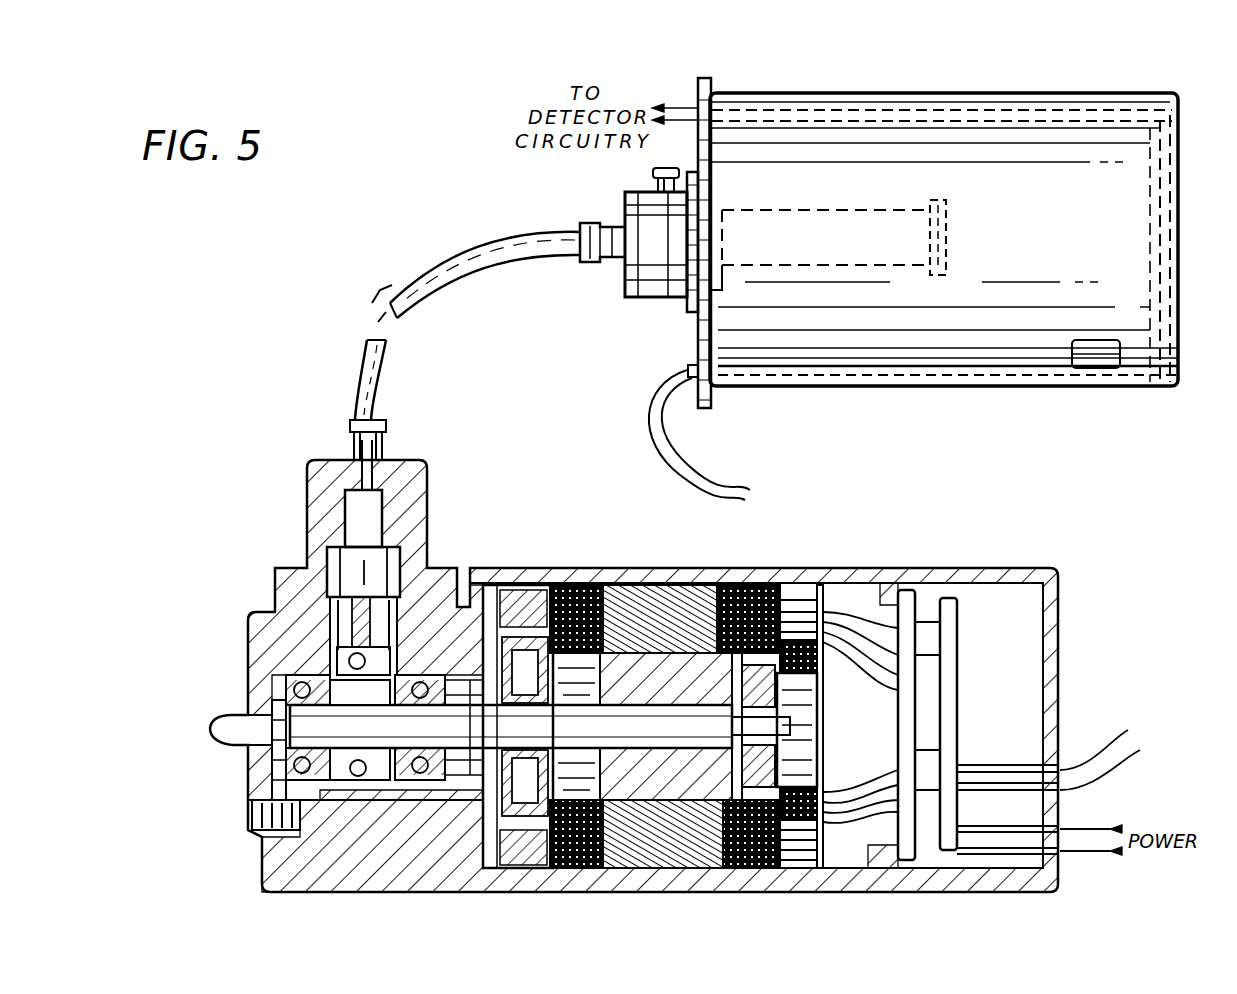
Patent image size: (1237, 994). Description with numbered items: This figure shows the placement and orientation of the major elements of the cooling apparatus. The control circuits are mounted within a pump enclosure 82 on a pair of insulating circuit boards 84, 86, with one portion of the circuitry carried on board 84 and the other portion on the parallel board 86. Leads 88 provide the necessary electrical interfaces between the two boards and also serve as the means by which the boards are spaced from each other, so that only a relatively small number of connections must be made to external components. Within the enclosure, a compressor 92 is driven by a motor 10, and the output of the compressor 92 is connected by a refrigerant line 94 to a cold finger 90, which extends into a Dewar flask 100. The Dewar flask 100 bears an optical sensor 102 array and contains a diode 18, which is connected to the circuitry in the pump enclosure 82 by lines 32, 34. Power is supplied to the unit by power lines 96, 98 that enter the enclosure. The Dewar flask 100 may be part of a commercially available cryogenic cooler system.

The motor 10 is at (638, 583).
The diode 18 is at (1122, 370).
The line 32 is at (710, 478).
The line 34 is at (715, 483).
The pump enclosure 82 is at (844, 583).
The insulating circuit board 84 is at (908, 590).
The insulating circuit board 86 is at (952, 600).
The leads 88 is at (930, 660).
The cold finger 90 is at (902, 208).
The compressor 92 is at (312, 614).
The refrigerant line 94 is at (354, 352).
The power line 96 is at (1098, 830).
The power line 98 is at (1098, 850).
The Dewar flask 100 is at (884, 92).
The optical sensor array 102 is at (1158, 190).